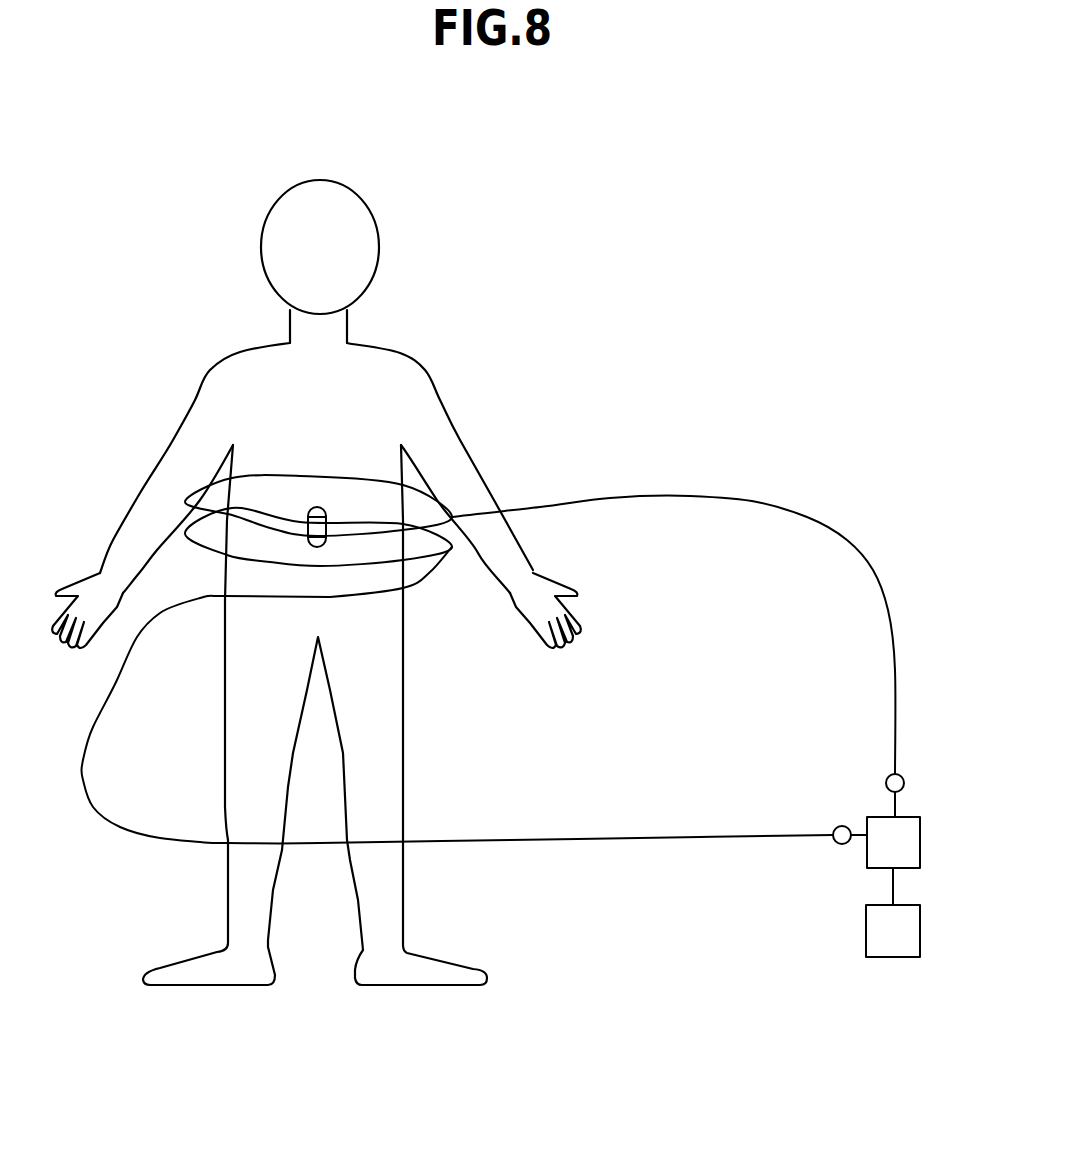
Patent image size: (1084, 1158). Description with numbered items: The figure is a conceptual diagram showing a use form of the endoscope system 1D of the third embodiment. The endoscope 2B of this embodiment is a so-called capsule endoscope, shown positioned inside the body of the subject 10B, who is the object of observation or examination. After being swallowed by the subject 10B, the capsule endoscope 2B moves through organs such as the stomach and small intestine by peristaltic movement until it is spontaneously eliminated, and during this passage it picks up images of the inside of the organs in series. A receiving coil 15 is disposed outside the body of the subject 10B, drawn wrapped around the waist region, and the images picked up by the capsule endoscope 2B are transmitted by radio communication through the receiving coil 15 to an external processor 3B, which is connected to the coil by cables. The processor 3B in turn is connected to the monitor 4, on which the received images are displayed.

The subject 10B is at (398, 342).
The endoscope system 1D is at (580, 317).
The capsule endoscope 2B is at (323, 505).
The receiving coil 15 is at (428, 608).
The processor 3B is at (872, 816).
The monitor 4 is at (866, 935).